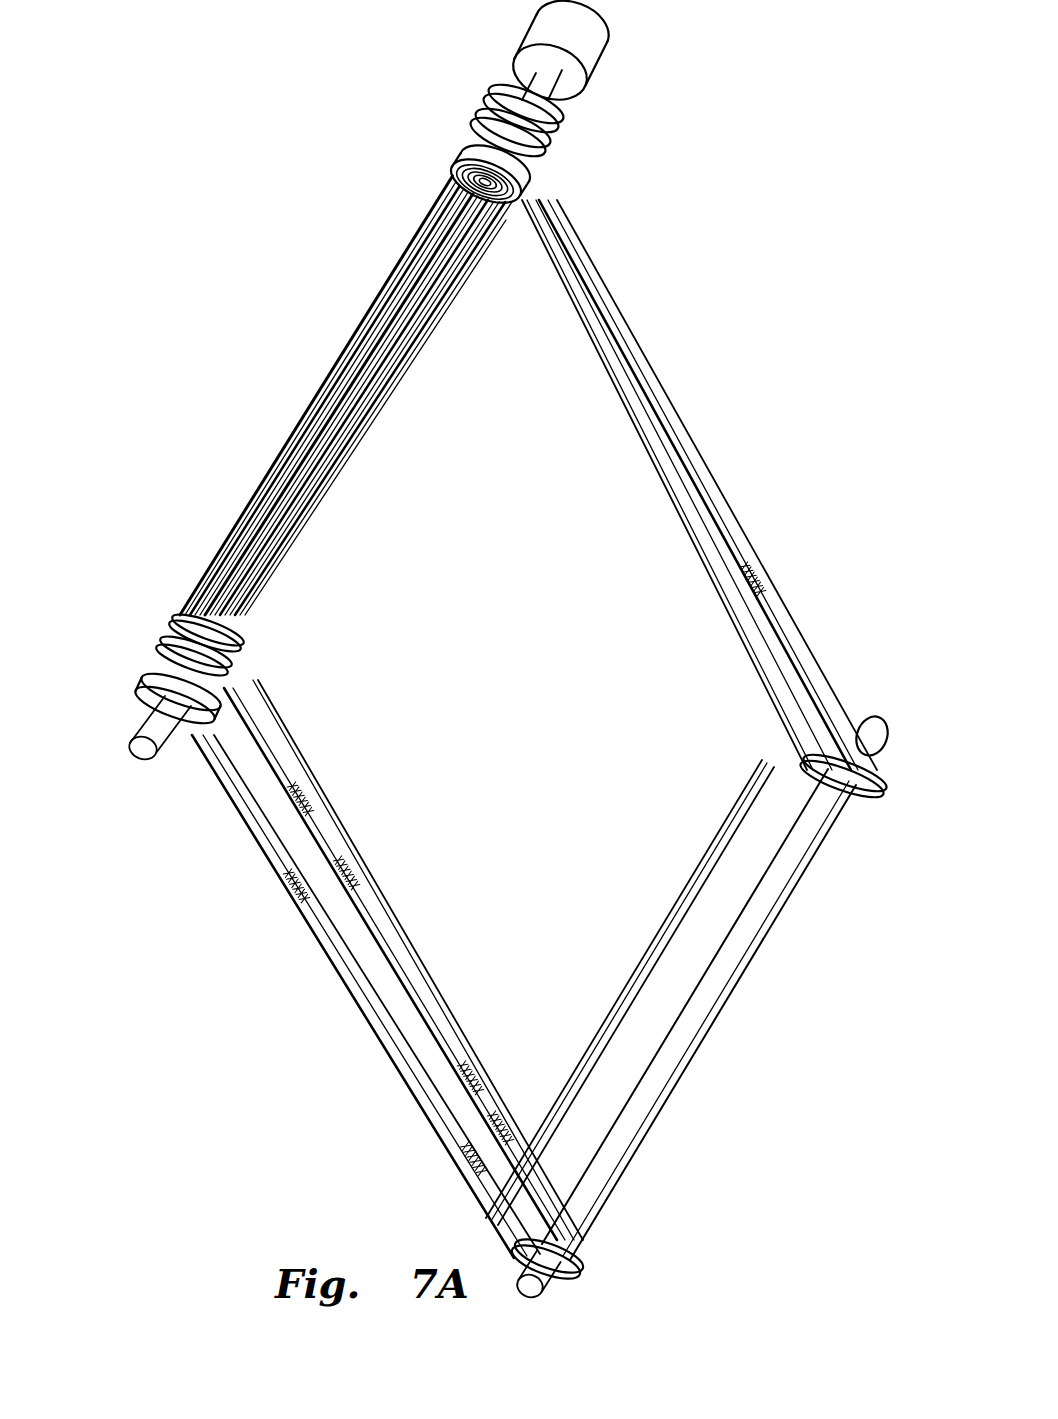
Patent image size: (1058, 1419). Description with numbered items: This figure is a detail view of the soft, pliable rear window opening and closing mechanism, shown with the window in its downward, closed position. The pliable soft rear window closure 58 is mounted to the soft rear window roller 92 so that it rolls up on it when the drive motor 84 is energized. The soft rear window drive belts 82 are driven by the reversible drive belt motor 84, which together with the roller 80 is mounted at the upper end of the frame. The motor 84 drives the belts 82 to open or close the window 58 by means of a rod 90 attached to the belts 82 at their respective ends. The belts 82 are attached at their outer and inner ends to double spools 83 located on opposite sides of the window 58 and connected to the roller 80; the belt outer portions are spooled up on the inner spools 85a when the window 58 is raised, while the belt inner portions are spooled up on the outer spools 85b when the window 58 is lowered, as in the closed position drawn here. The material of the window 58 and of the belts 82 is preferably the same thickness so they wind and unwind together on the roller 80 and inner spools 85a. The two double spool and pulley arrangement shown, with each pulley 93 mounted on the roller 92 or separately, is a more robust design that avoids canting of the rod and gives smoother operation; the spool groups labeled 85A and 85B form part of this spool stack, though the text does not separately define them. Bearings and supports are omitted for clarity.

The soft rear window roller 80 is at (238, 517).
The pliable soft rear window closure 58 is at (475, 571).
The soft rear window drive belts 82 is at (752, 548).
The double spools 83 is at (555, 105).
The soft rear window drive belt reversible motor 84 is at (592, 80).
The pulley 85A is at (458, 150).
The rings 85B is at (488, 95).
The inner spools 85a is at (172, 632).
The outer spools 85b is at (140, 700).
The rod 90 is at (700, 872).
The soft rear window roller 92 is at (665, 1075).
The pulley 93 is at (866, 806).